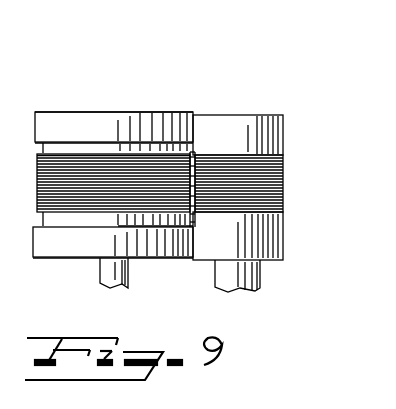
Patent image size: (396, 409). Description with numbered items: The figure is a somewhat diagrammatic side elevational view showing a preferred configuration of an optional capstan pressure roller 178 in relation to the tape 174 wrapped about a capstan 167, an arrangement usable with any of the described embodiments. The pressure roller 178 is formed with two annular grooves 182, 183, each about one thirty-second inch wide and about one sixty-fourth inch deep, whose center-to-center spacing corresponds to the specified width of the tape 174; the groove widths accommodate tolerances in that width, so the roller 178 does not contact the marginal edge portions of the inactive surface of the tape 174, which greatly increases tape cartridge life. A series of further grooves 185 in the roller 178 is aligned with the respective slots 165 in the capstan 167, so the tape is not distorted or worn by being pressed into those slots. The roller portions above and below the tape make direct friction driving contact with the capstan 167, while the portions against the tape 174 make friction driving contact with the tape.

The annular groove 182 is at (70, 150).
The pressure roller 178 is at (99, 111).
The series of further grooves 185 is at (132, 170).
The tape 174 is at (196, 154).
The capstan 167 is at (283, 132).
The slot 165 is at (284, 175).
The annular groove 183 is at (73, 219).